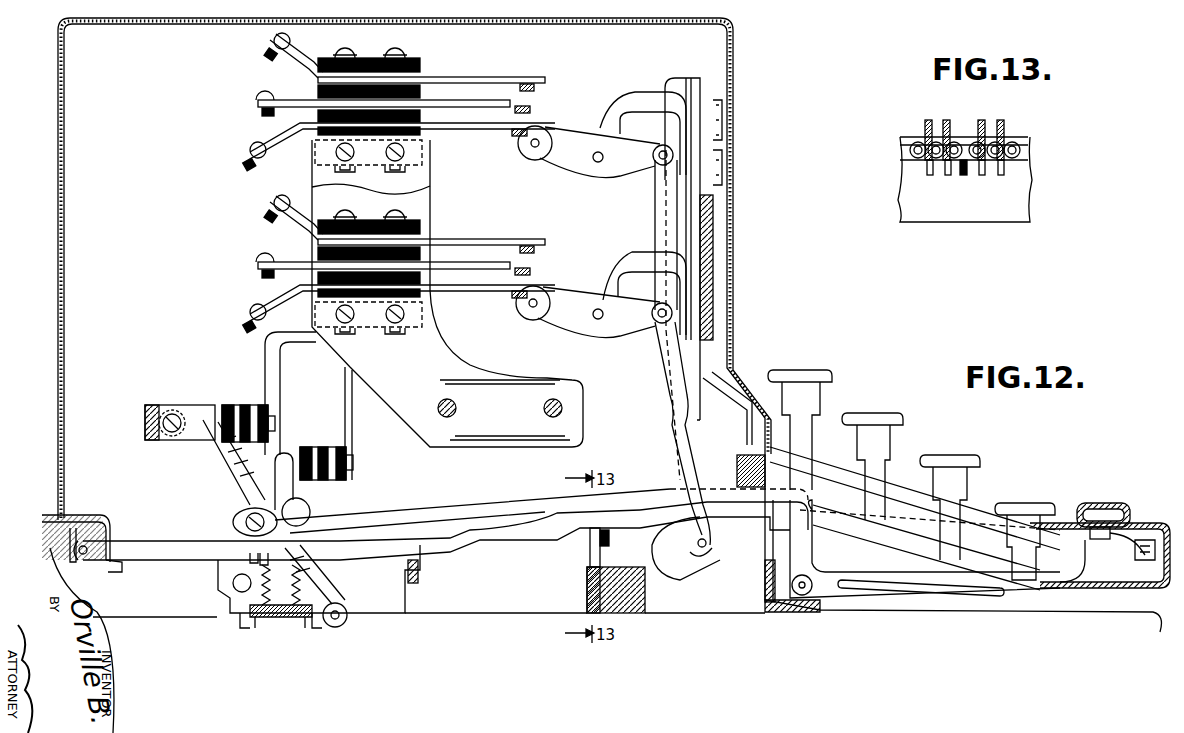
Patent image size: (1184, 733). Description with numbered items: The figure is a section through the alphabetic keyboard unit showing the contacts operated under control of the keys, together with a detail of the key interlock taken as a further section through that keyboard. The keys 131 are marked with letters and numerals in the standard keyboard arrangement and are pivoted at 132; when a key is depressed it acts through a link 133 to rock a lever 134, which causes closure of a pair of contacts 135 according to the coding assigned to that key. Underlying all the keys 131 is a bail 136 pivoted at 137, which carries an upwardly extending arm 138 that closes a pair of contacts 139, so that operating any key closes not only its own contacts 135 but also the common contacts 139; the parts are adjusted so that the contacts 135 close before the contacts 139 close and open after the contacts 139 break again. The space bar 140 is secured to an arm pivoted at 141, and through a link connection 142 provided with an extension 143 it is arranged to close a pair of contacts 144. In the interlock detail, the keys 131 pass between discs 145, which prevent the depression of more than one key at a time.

In FIG. 12, the keys 131 is at (1023, 513).
In FIG. 13, the keys 131 is at (962, 130).
In FIG. 12, the key pivot 132 is at (87, 557).
In FIG. 12, the link 133 is at (653, 190).
In FIG. 12, the lever 134 is at (560, 315).
In FIG. 12, the pairs of contacts 135 is at (538, 122).
In FIG. 12, the bail 136 is at (417, 580).
In FIG. 12, the bail pivot 137 is at (335, 615).
In FIG. 12, the upwardly extending arm 138 is at (285, 485).
In FIG. 12, the pair of contacts 139 is at (318, 447).
In FIG. 12, the space bar 140 is at (1100, 503).
In FIG. 12, the space bar arm pivot 141 is at (800, 590).
In FIG. 12, the link connection 142 is at (432, 500).
In FIG. 12, the extension 143 is at (210, 432).
In FIG. 12, the pair of contacts 144 is at (242, 403).
In FIG. 13, the discs 145 is at (958, 173).